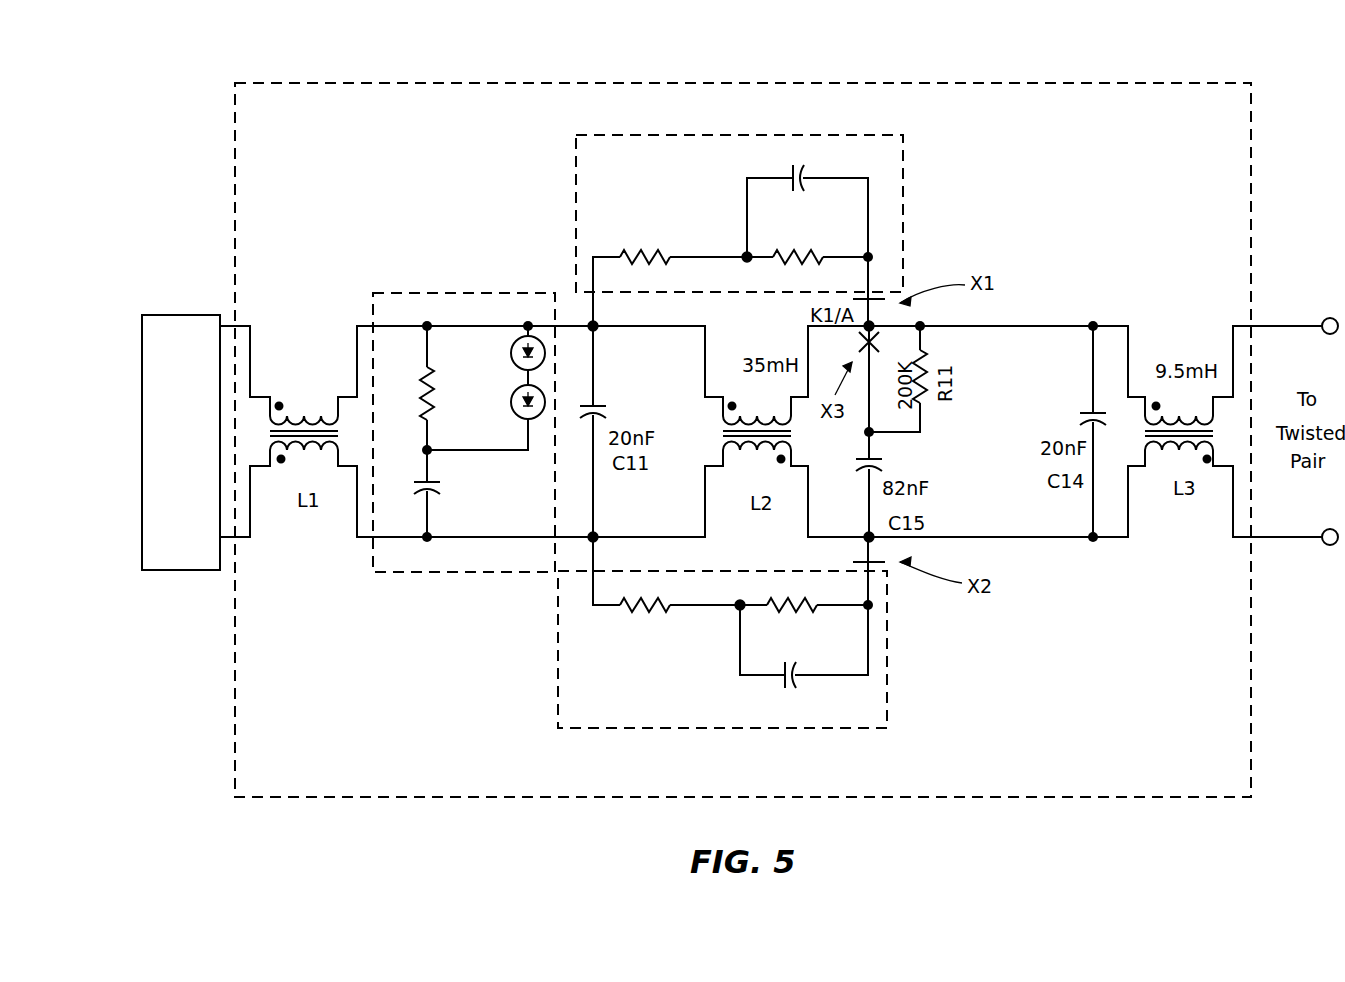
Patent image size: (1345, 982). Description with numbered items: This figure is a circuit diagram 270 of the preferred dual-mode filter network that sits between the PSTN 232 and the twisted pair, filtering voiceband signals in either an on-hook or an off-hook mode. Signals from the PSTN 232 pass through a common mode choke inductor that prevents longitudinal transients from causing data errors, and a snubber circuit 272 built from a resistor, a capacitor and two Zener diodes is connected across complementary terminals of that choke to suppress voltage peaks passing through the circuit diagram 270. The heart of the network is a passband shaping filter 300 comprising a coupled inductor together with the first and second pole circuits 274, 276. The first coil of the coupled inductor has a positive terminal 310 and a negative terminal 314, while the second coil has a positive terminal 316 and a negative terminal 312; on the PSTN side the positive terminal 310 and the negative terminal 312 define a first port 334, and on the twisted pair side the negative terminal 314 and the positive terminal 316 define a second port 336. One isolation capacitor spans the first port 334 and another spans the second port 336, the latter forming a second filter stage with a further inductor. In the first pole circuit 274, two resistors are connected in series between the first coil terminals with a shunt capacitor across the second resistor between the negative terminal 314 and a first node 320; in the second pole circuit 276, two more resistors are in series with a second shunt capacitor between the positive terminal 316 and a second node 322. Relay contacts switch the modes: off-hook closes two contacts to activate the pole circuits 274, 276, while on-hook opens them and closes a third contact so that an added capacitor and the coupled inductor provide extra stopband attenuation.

The circuit diagram 270 is at (806, 82).
The snubber circuit 272 is at (470, 292).
The first pole circuit 274 is at (905, 185).
The second pole circuit 276 is at (890, 678).
The passband shaping filter 300 is at (743, 431).
The positive terminal 310 is at (590, 324).
The negative terminal 312 is at (592, 540).
The negative terminal 314 is at (872, 326).
The positive terminal 316 is at (872, 538).
The first node 320 is at (745, 256).
The second node 322 is at (738, 606).
The PSTN 232 is at (178, 571).
The first port 334 is at (575, 493).
The second port 336 is at (895, 462).